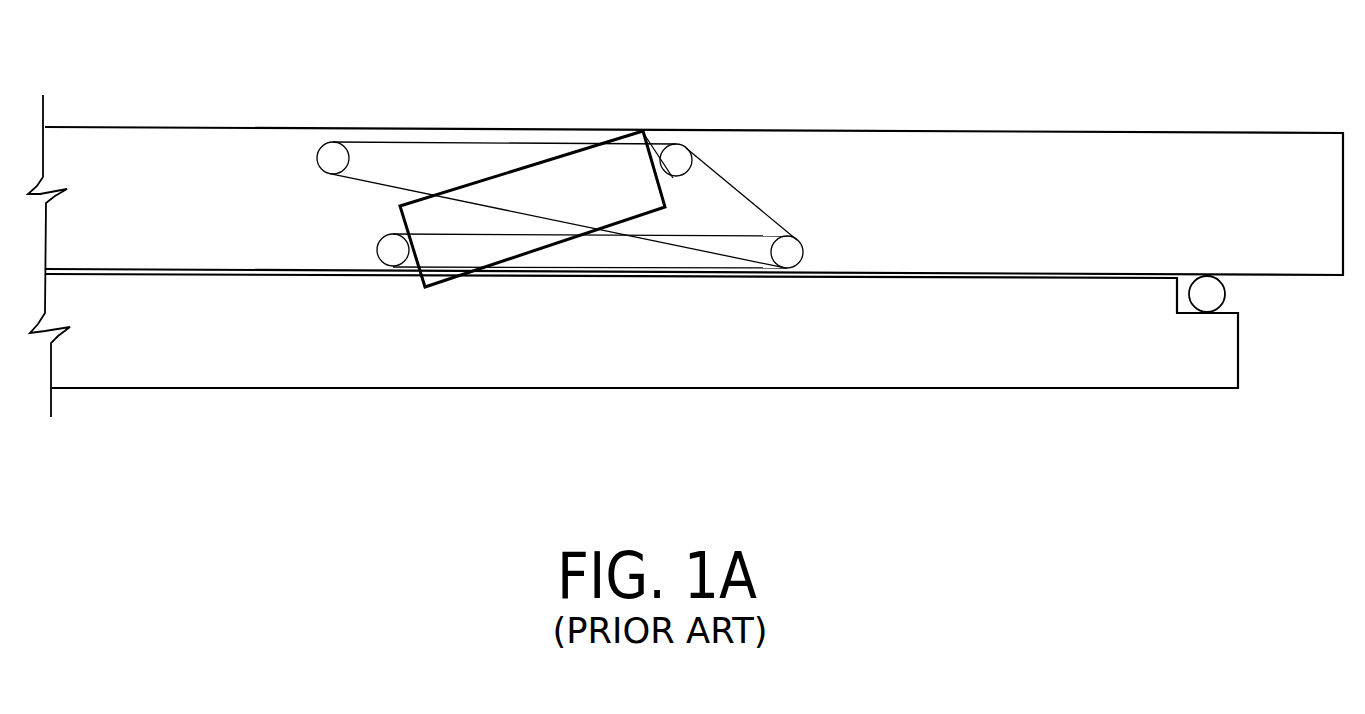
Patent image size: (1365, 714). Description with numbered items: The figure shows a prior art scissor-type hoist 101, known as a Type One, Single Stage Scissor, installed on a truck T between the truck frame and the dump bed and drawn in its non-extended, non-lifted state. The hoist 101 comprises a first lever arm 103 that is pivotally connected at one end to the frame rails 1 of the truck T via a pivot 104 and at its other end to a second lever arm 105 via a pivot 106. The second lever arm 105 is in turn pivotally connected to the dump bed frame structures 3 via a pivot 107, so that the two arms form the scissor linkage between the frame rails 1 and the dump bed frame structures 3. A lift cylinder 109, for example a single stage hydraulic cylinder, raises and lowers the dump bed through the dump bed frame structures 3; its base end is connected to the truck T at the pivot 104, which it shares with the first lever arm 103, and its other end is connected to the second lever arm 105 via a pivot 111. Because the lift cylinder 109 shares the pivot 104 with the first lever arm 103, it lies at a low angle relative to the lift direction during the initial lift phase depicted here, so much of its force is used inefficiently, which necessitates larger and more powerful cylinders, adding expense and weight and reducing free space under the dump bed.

The frame rails 1 is at (860, 352).
The dump bed frame structures 3 is at (882, 152).
The truck T is at (1027, 112).
The scissor-type hoist 101 is at (563, 120).
The first lever arm 103 is at (593, 248).
The pivot 104 is at (392, 250).
The second lever arm 105 is at (398, 157).
The pivot 106 is at (790, 248).
The pivot 107 is at (333, 158).
The lift cylinder 109 is at (592, 203).
The pivot 111 is at (677, 153).